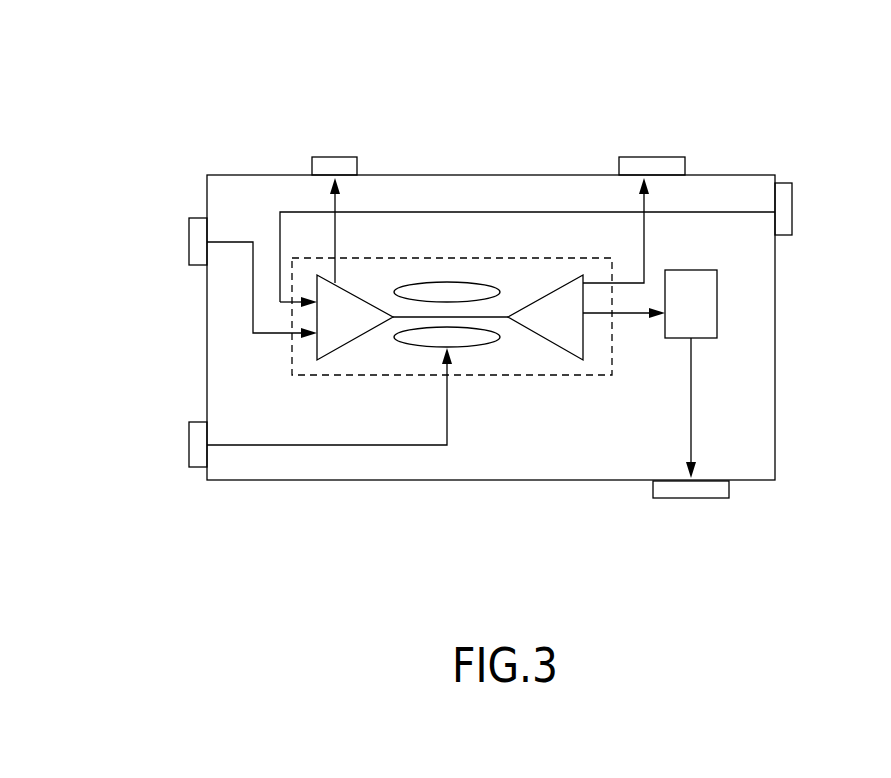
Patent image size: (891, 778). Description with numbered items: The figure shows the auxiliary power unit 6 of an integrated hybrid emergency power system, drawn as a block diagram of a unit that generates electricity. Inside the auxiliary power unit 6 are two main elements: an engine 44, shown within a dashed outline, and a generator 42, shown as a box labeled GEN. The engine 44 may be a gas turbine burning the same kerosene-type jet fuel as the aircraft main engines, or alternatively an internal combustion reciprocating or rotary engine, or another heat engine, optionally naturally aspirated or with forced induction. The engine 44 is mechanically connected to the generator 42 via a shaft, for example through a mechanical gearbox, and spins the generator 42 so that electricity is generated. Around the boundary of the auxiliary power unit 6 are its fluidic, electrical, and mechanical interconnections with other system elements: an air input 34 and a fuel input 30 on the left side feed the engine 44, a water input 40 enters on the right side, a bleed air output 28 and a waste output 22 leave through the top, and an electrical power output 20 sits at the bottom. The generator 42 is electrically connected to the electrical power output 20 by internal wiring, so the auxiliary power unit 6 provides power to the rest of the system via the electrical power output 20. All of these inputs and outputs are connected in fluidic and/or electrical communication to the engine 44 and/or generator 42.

The auxiliary power unit 6 is at (548, 90).
The electrical power output 20 is at (702, 498).
The waste output 22 is at (662, 157).
The bleed air output 28 is at (343, 157).
The fuel input 30 is at (189, 450).
The air input 34 is at (189, 238).
The water input 40 is at (793, 203).
The generator 42 is at (717, 333).
The engine 44 is at (548, 377).